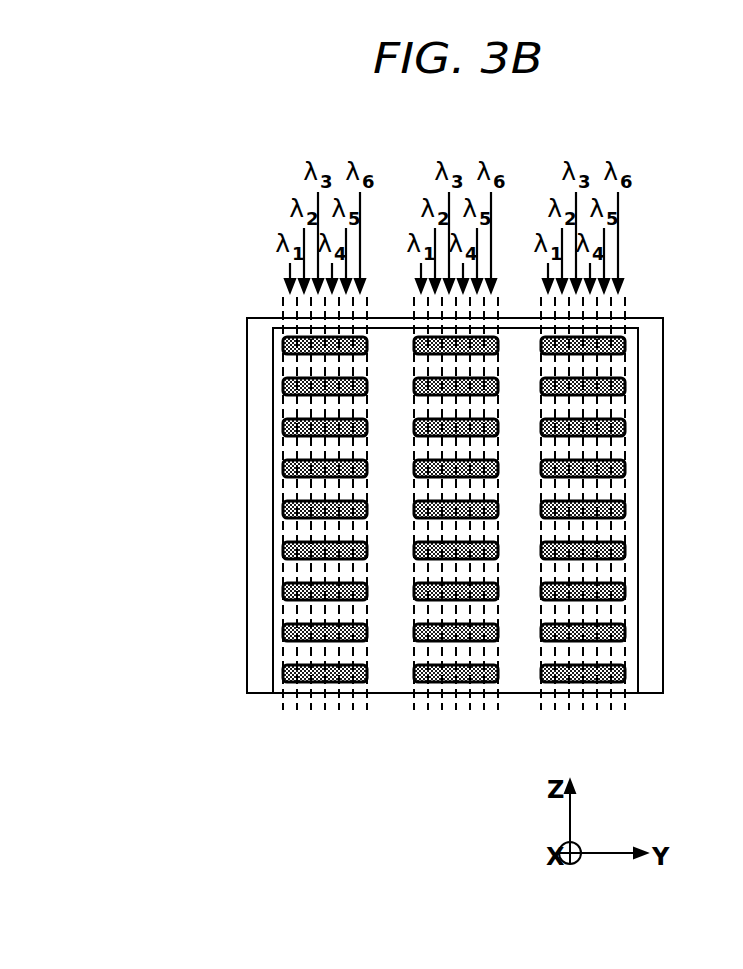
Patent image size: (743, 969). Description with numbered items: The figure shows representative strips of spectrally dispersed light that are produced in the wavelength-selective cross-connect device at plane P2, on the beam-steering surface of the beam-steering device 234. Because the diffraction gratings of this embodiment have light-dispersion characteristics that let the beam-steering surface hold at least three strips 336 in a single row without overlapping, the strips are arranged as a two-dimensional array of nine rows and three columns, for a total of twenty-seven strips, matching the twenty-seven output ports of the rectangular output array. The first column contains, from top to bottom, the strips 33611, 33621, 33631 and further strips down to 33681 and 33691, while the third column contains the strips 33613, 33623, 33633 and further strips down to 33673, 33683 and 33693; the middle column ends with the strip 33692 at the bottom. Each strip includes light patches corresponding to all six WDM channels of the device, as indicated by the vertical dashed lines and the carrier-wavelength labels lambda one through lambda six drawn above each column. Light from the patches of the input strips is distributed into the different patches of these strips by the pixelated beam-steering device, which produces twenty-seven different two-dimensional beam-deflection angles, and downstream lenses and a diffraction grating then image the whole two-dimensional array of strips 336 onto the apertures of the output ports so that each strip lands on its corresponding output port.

The beam-steering device 234 is at (445, 481).
The plane P2 is at (241, 303).
The strips of dispersed light 336 is at (454, 555).
The strip 336_1,1 33611 is at (283, 346).
The strip 336_2,1 33621 is at (283, 387).
The strip 336_3,1 33631 is at (283, 428).
The strip 336_8,1 33681 is at (283, 633).
The strip 336_9,1 33691 is at (283, 674).
The strip 336_9,2 33692 is at (413, 676).
The strip 336_1,3 33613 is at (625, 344).
The strip 336_2,3 33623 is at (625, 385).
The strip 336_3,3 33633 is at (625, 426).
The strip 336_7,3 33673 is at (625, 590).
The strip 336_8,3 33683 is at (625, 631).
The strip 336_9,3 33693 is at (625, 672).